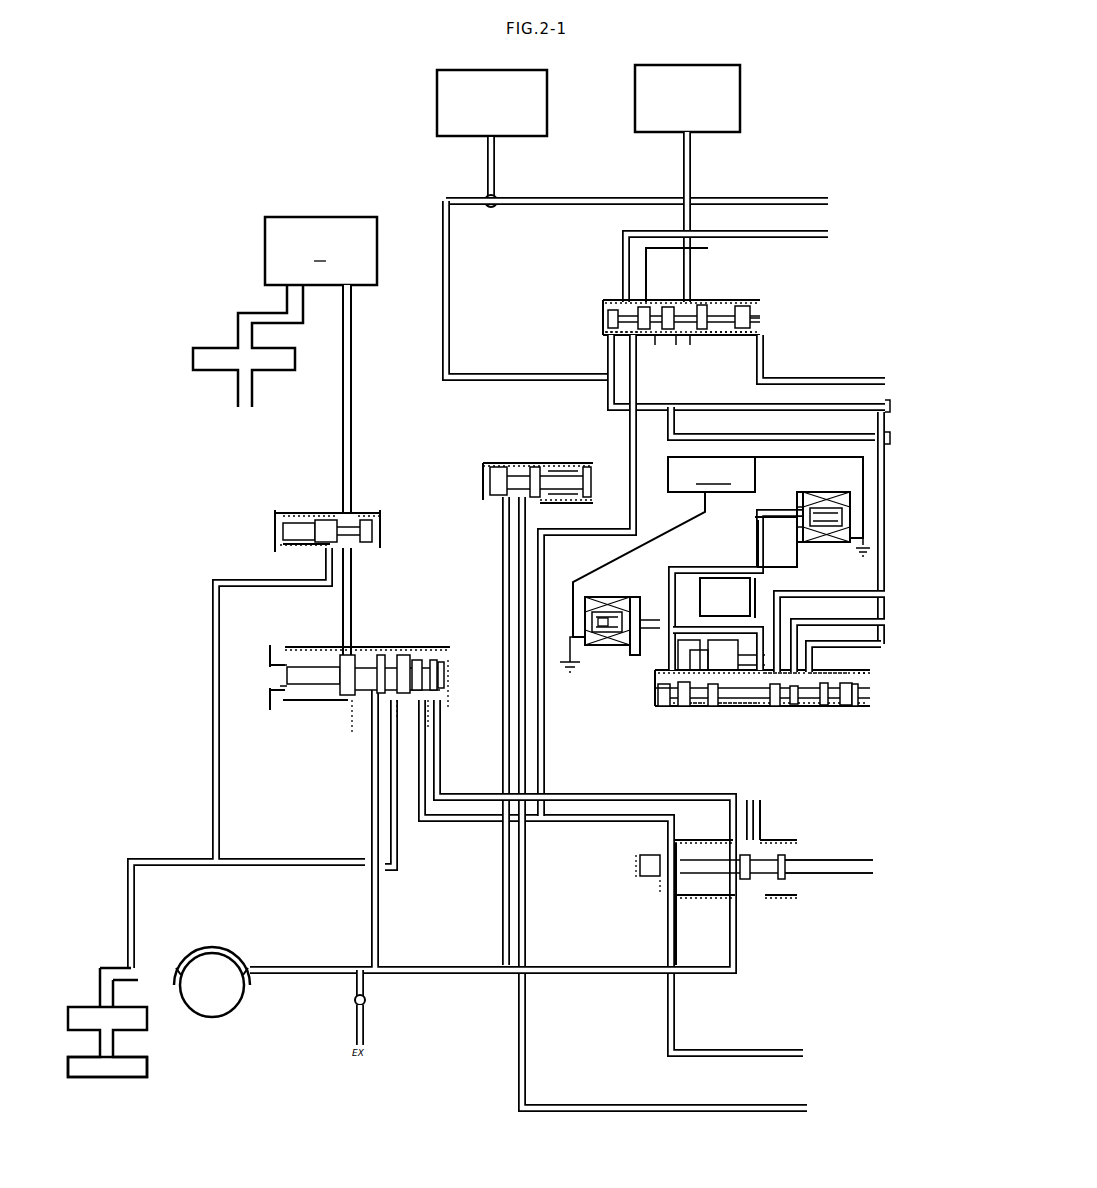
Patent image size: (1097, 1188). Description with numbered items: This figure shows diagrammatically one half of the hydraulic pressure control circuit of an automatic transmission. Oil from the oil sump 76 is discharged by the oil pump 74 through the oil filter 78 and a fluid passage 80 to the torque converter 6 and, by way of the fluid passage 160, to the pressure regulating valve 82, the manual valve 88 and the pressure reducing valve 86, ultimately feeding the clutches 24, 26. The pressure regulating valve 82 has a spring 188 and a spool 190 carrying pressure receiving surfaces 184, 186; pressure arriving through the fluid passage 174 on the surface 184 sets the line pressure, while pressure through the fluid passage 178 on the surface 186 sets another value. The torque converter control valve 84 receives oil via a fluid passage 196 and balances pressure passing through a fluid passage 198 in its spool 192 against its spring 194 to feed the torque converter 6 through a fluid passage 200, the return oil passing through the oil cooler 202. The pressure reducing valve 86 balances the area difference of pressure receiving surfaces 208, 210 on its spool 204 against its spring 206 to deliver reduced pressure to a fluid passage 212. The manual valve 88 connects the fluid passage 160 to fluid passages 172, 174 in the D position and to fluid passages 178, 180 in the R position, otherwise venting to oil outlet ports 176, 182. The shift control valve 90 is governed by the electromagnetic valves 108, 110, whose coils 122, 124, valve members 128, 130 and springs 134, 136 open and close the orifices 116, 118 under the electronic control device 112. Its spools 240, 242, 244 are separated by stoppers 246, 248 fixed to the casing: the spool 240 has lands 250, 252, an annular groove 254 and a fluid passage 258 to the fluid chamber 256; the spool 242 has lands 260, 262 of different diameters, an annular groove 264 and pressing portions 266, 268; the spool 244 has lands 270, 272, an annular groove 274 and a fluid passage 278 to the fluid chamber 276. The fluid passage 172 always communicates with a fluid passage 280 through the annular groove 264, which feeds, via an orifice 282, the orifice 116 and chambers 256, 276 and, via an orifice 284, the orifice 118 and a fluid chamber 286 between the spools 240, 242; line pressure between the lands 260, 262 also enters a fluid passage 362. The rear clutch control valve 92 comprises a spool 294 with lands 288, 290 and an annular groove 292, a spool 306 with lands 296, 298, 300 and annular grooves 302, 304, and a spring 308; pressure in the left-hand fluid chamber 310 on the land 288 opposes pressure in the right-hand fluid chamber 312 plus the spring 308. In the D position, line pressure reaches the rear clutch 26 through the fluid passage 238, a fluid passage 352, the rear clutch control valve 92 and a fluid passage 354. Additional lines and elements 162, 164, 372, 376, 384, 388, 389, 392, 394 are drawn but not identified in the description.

The torque converter 6 is at (321, 251).
The clutch 24 is at (538, 95).
The rear clutch 26 is at (732, 90).
The oil pump 74 is at (218, 1010).
The oil sump 76 is at (83, 1070).
The oil filter 78 is at (72, 1020).
The fluid passage 80 is at (114, 968).
The pressure regulating valve 82 is at (366, 667).
The torque converter control valve 84 is at (336, 509).
The pressure reducing valve 86 is at (486, 460).
The manual valve 88 is at (739, 865).
The shift control valve 90 is at (760, 703).
The rear clutch control valve 92 is at (687, 323).
The electromagnetic valve 108 is at (812, 512).
The electromagnetic valve 110 is at (590, 662).
The electronic control device 112 is at (664, 547).
The orifice 116 is at (794, 518).
The orifice 118 is at (640, 600).
The coil 122 is at (832, 506).
The coil 124 is at (606, 641).
The valve member 128 is at (798, 505).
The valve member 130 is at (608, 635).
The spring 134 is at (848, 528).
The spring 136 is at (600, 640).
The fluid passage 160 is at (504, 577).
The valve stem 162 is at (845, 874).
The valve spool 164 is at (706, 858).
The fluid passage 172 is at (766, 835).
The fluid passage 174 is at (635, 795).
The oil outlet port 176 is at (795, 858).
The fluid passage 178 is at (452, 330).
The fluid passage 180 is at (670, 942).
The oil outlet port 182 is at (645, 888).
The pressure receiving surface 184 is at (448, 662).
The pressure receiving surface 186 is at (418, 660).
The spring 188 is at (350, 700).
The valve land 190 is at (302, 662).
The spool 192 is at (310, 520).
The spring 194 is at (290, 520).
The fluid passage 196 is at (354, 584).
The fluid passage 198 is at (370, 520).
The fluid passage 200 is at (343, 412).
The oil cooler 202 is at (210, 350).
The spool 204 is at (490, 485).
The spring 206 is at (522, 465).
The pressure receiving surface 208 is at (518, 462).
The pressure receiving surface 210 is at (548, 462).
The fluid passage 212 is at (505, 538).
The fluid passage 238 is at (792, 377).
The spool 240 is at (675, 706).
The spool 242 is at (735, 706).
The spool 244 is at (824, 706).
The stopper 246 is at (712, 706).
The stopper 248 is at (796, 706).
The land 250 is at (658, 680).
The land 252 is at (684, 706).
The annular groove 254 is at (680, 660).
The fluid chamber 256 is at (660, 700).
The fluid passage 258 is at (658, 706).
The land 260 is at (716, 670).
The land 262 is at (773, 712).
The annular groove 264 is at (745, 668).
The pressing portion 266 is at (696, 742).
The pressing portion 268 is at (776, 706).
The land 270 is at (822, 672).
The land 272 is at (848, 706).
The annular groove 274 is at (862, 672).
The fluid chamber 276 is at (864, 696).
The fluid passage 278 is at (865, 688).
The fluid passage 280 is at (757, 550).
The orifice 282 is at (758, 598).
The orifice 284 is at (730, 625).
The fluid chamber 286 is at (700, 664).
The land 288 is at (608, 312).
The land 290 is at (648, 275).
The annular groove 292 is at (610, 380).
The spool 294 is at (632, 306).
The land 296 is at (656, 346).
The land 298 is at (692, 346).
The land 300 is at (745, 333).
The annular groove 302 is at (678, 346).
The annular groove 304 is at (718, 300).
The spool 306 is at (700, 296).
The spring 308 is at (764, 320).
The fluid chamber 310 is at (606, 321).
The fluid chamber 312 is at (764, 312).
The fluid passage 352 is at (746, 442).
The fluid passage 354 is at (683, 158).
The fluid passage 362 is at (824, 592).
The passage 372 is at (834, 620).
The passage 376 is at (604, 204).
The orifice 384 is at (498, 198).
The bore end 388 is at (604, 347).
The passage 389 is at (840, 642).
The passage 392 is at (622, 250).
The passage 394 is at (720, 360).